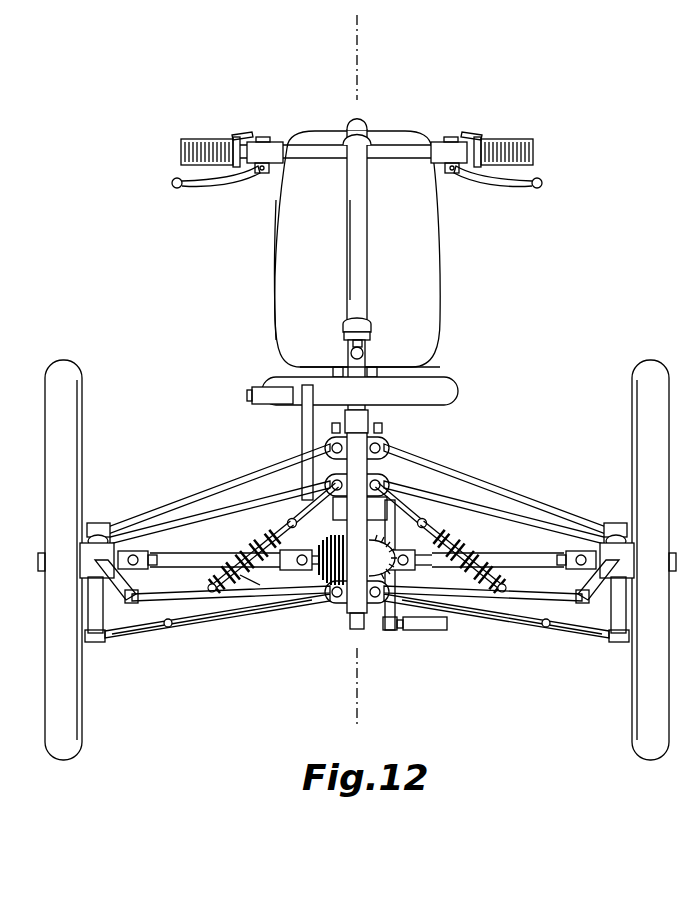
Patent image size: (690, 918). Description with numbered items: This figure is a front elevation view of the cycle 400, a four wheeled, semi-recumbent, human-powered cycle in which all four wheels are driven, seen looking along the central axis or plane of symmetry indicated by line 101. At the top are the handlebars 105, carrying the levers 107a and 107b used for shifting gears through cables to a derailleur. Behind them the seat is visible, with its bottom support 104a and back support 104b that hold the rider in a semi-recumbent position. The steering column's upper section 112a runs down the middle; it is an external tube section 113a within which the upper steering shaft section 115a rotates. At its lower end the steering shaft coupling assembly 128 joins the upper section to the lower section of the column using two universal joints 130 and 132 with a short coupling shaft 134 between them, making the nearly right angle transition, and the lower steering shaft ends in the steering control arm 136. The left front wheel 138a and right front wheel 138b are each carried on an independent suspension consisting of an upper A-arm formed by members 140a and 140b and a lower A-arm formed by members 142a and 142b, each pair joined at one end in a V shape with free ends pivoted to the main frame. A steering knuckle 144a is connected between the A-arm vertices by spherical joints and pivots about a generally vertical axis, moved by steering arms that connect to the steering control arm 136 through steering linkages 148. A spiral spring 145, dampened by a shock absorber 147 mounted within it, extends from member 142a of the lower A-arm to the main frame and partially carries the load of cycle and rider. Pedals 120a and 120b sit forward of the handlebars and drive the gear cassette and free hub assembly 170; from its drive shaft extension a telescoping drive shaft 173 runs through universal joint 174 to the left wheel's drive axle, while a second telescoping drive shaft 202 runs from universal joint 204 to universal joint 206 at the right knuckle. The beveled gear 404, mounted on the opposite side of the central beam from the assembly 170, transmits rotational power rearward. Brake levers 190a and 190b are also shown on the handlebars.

The central axis line 101 is at (353, 57).
The handlebars 105 is at (388, 148).
The gear shifting lever 107a is at (468, 130).
The gear shifting lever 107b is at (242, 132).
The upper steering tube section 113a is at (370, 222).
The upper steering column section 112a is at (382, 265).
The upper steering shaft section 115a is at (370, 337).
The steering shaft coupling assembly 128 is at (358, 249).
The bottom support 104a is at (254, 387).
The back support 104b is at (272, 288).
The pedal 120a is at (417, 623).
The pedal 120b is at (280, 388).
The universal joint 130 is at (365, 352).
The universal joint 132 is at (365, 390).
The coupling shaft 134 is at (378, 368).
The steering control arm 136 is at (353, 630).
The left front wheel 138a is at (632, 705).
The right front wheel 138b is at (82, 705).
The upper A-arm member 140a is at (262, 498).
The upper A-arm member 140b is at (193, 493).
The lower A-arm member 142a is at (203, 620).
The lower A-arm member 142b is at (248, 592).
The steering knuckle 144a is at (123, 537).
The spiral spring 145 is at (213, 507).
The shock absorber 147 is at (220, 553).
The steering linkage 148 is at (297, 618).
The gear cassette and free hub assembly 170 is at (322, 596).
The telescoping drive shaft 173 is at (543, 627).
The universal joint 174 is at (423, 620).
The right brake lever 190a is at (522, 190).
The left brake lever 190b is at (190, 190).
The second telescoping drive shaft 202 is at (130, 592).
The universal joint 204 is at (258, 585).
The universal joint 206 is at (113, 580).
The cycle 400 is at (552, 296).
The beveled gear 404 is at (383, 618).